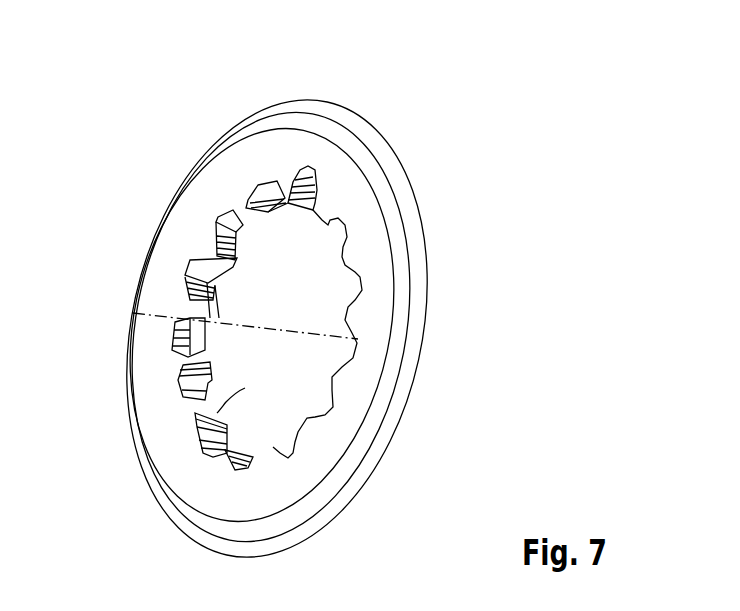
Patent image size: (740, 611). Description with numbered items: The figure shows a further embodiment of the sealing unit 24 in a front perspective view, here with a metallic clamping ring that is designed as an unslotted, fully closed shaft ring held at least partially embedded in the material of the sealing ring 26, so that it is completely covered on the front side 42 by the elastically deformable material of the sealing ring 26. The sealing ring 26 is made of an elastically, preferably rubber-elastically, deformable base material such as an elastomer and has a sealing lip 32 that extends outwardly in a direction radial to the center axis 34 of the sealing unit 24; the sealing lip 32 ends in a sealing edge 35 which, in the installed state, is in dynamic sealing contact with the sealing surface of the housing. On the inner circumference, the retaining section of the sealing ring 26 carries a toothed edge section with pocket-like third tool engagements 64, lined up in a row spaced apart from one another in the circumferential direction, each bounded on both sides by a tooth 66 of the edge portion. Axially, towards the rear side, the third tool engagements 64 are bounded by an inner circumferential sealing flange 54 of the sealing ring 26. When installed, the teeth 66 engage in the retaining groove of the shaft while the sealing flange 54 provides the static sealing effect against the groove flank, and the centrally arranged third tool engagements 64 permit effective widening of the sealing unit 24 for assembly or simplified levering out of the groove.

The sealing unit 24 is at (554, 194).
The sealing ring 26 is at (170, 445).
The sealing lip 32 is at (417, 300).
The center axis 34 is at (307, 331).
The sealing edge 35 is at (428, 265).
The front side 42 is at (386, 262).
The sealing flange 54 is at (186, 273).
The third tool engagements 64 is at (262, 220).
The tooth 66 is at (336, 379).